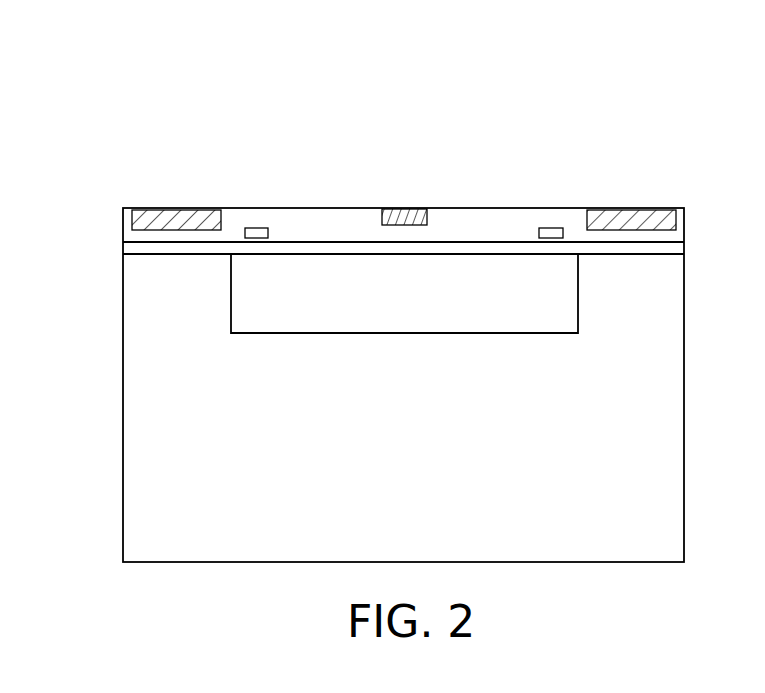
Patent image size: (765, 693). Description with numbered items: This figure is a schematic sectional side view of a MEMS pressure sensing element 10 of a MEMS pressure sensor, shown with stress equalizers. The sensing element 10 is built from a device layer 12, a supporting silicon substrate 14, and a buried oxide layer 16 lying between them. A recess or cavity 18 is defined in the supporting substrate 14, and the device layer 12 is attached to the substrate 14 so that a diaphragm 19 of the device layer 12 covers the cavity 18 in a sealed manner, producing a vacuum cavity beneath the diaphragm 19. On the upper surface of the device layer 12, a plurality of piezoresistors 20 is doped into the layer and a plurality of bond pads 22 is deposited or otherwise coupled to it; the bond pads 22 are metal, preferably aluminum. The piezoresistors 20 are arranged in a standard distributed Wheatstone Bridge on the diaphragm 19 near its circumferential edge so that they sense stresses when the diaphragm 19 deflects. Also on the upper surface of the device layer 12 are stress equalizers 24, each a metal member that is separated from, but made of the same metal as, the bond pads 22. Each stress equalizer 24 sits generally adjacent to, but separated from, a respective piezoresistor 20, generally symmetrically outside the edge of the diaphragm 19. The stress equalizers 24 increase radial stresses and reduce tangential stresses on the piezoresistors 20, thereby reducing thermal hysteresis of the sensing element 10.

The MEMS pressure sensing element 10 is at (82, 87).
The device layer 12 is at (477, 228).
The supporting silicon substrate 14 is at (143, 390).
The buried oxide layer 16 is at (457, 254).
The cavity 18 is at (403, 297).
The diaphragm 19 is at (328, 208).
The piezoresistors 20 is at (255, 228).
The bond pads 22 is at (178, 209).
The stress equalizers 24 is at (402, 209).